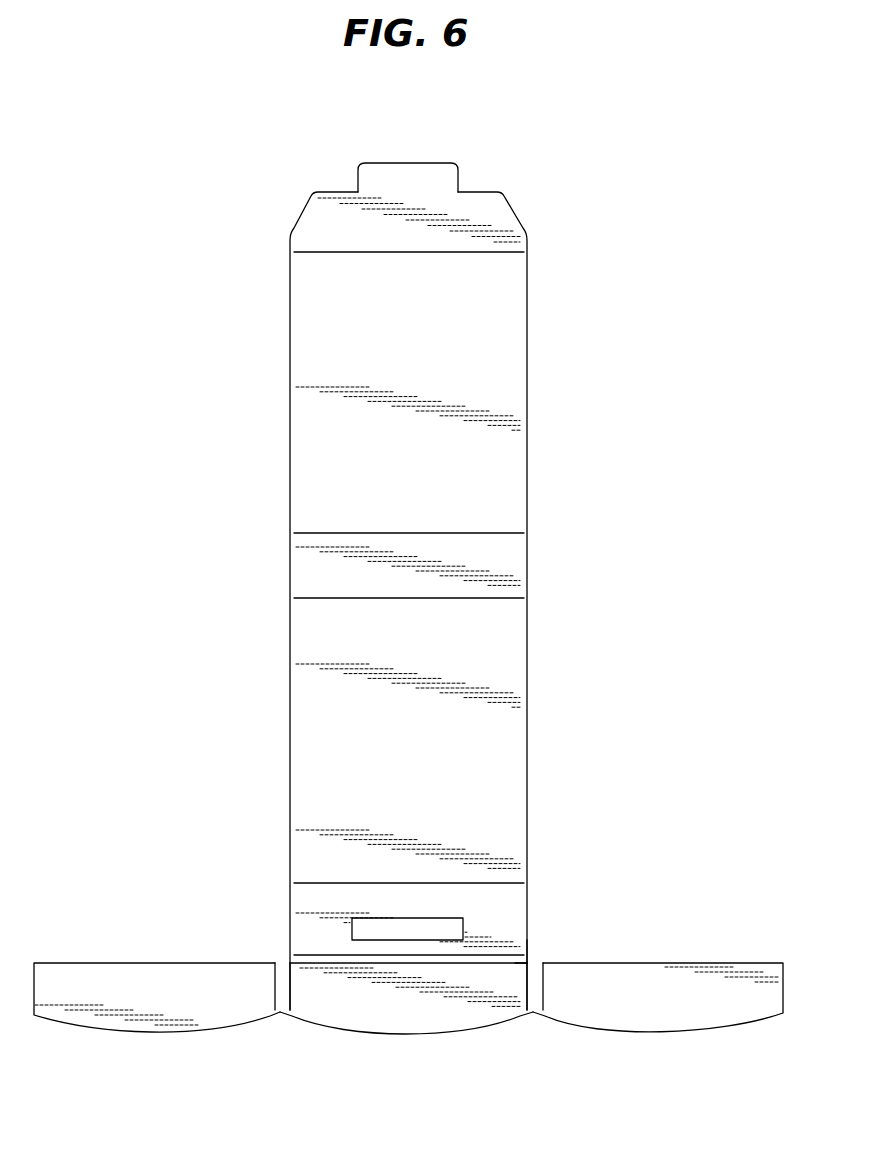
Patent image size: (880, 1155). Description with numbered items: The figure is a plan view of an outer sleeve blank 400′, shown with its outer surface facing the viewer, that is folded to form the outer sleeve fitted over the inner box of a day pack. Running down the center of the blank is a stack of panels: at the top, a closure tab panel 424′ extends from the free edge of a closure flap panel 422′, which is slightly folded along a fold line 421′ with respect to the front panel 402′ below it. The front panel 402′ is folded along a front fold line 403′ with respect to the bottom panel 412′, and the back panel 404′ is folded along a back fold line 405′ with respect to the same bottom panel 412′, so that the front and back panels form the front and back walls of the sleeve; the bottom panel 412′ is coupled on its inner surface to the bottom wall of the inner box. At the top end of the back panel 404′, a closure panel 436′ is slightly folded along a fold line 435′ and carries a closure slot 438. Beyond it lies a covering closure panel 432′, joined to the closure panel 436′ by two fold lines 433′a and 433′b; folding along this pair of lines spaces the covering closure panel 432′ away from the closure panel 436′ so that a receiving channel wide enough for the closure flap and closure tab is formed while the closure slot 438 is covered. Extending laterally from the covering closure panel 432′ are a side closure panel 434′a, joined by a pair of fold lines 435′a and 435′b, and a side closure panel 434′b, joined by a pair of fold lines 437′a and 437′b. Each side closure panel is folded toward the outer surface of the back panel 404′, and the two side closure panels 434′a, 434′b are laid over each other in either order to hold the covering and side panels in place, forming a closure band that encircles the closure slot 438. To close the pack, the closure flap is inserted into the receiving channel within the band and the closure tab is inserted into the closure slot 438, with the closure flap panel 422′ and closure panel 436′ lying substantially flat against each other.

The outer sleeve blank 400′ is at (580, 463).
The closure tab panel 424′ is at (398, 172).
The closure flap panel 422′ is at (470, 212).
The fold line 421′ is at (427, 252).
The front panel 402′ is at (382, 362).
The front fold line 403′ is at (343, 532).
The bottom panel 412′ is at (433, 560).
The back fold line 405′ is at (333, 600).
The back panel 404′ is at (433, 720).
The fold line 435′ is at (325, 883).
The closure slot 438 is at (407, 928).
The closure panel 436′ is at (345, 902).
The fold line 433′b is at (493, 953).
The fold line 433′a is at (503, 962).
The side closure panel 434′a is at (142, 990).
The side closure panel 434′b is at (680, 990).
The covering closure panel 432′ is at (415, 1000).
The fold line 435′a is at (273, 993).
The fold line 435′b is at (292, 988).
The fold line 437′a is at (523, 990).
The fold line 437′b is at (543, 998).